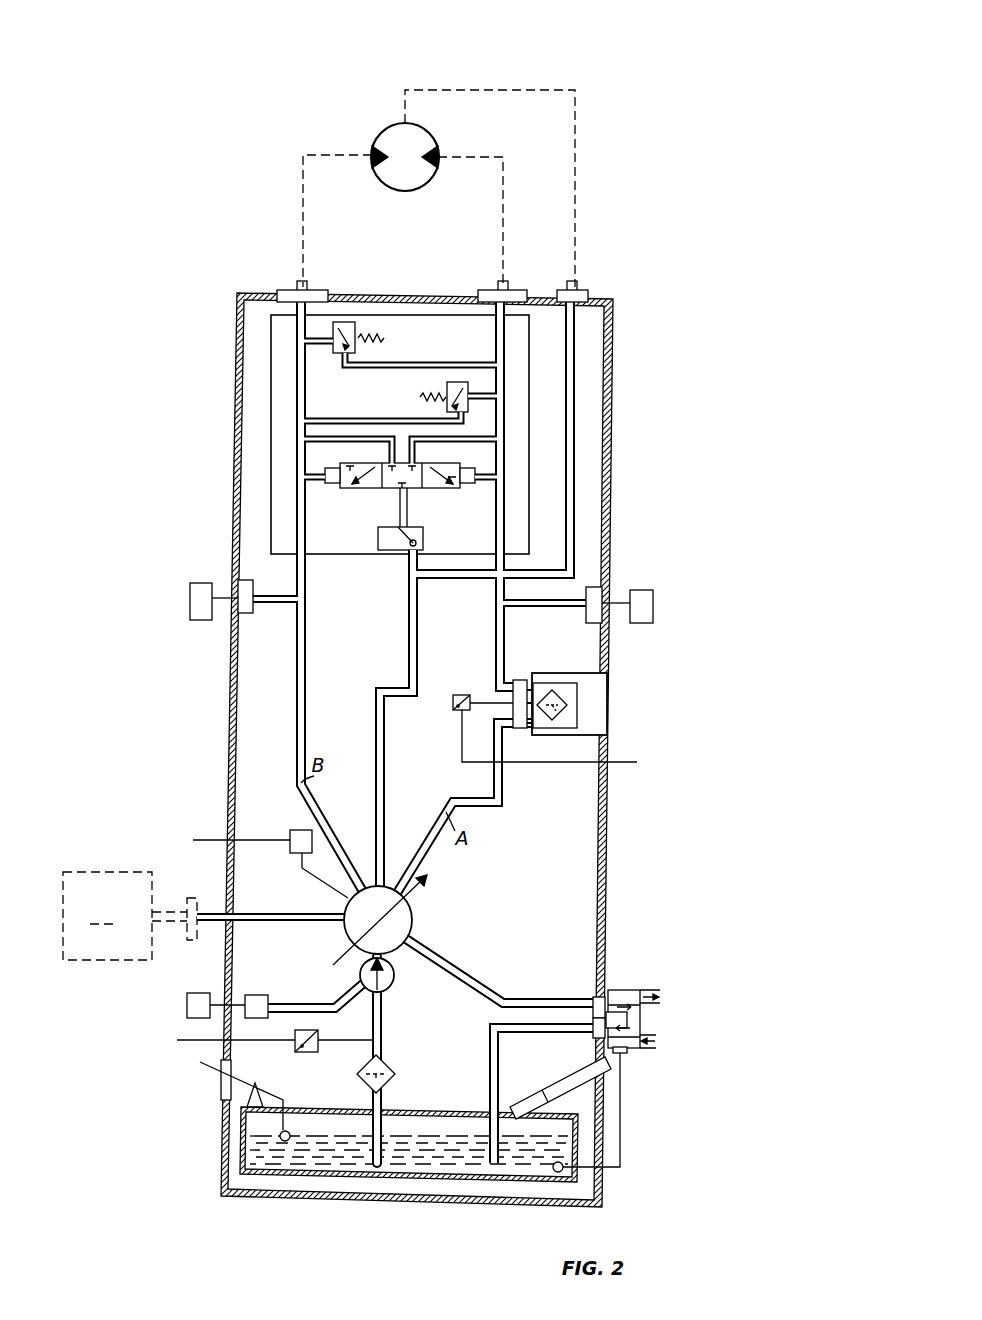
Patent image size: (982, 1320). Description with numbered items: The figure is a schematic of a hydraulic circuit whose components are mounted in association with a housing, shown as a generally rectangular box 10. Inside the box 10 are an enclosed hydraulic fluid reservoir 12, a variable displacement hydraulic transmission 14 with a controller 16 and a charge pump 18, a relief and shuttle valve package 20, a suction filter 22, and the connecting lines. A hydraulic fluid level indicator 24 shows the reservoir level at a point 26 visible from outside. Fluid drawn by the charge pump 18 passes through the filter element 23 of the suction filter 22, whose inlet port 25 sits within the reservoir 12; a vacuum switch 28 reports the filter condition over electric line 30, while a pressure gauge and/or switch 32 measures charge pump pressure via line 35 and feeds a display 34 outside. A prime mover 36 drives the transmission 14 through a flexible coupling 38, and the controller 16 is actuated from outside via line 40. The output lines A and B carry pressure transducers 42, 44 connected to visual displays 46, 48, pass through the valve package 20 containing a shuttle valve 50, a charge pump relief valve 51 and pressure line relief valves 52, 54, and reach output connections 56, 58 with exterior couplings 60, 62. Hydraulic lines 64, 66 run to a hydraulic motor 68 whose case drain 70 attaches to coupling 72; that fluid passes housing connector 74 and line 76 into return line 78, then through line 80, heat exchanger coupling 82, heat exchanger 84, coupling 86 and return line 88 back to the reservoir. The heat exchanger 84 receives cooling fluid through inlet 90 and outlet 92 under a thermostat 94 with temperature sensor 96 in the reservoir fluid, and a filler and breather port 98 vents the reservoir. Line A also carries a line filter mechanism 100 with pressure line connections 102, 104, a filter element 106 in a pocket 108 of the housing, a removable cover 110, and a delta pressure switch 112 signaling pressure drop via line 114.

The housing 10 is at (234, 485).
The hydraulic fluid reservoir 12 is at (245, 1155).
The variable displacement hydraulic transmission 14 is at (412, 928).
The controller 16 is at (300, 829).
The charge pump 18 is at (390, 987).
The relief and shuttle valve package 20 is at (271, 379).
The suction filter 22 is at (389, 1064).
The filter element 23 is at (388, 1085).
The hydraulic fluid level indicator 24 is at (258, 1085).
The inlet port 25 is at (388, 1163).
The exterior viewing point 26 is at (216, 1086).
The vacuum switch 28 is at (318, 1034).
The electric line 30 is at (208, 1040).
The pressure gauge and/or switch 32 is at (257, 995).
The display 34 is at (187, 1000).
The line 35 is at (310, 1003).
The prime mover 36 is at (107, 916).
The flexible coupling 38 is at (190, 898).
The line 40 is at (205, 838).
The pressure transducer 42 is at (584, 624).
The pressure transducer 44 is at (245, 613).
The visual display 46 is at (640, 622).
The visual display 48 is at (195, 620).
The shuttle valve 50 is at (425, 510).
The charge pump relief valve 51 is at (375, 543).
The pressure line relief valve 52 is at (446, 391).
The pressure line relief valve 54 is at (357, 350).
The output connection 56 is at (515, 290).
The output connection 58 is at (316, 289).
The exterior coupling 60 is at (497, 284).
The exterior coupling 62 is at (298, 282).
The hydraulic line 64 is at (500, 195).
The hydraulic line 66 is at (302, 198).
The hydraulic motor 68 is at (385, 130).
The case drain 70 is at (513, 90).
The coupling 72 is at (577, 286).
The housing connector 74 is at (608, 301).
The line 76 is at (572, 517).
The return line 78 is at (407, 637).
The line 80 is at (484, 988).
The heat exchanger coupling 82 is at (595, 998).
The heat exchanger 84 is at (630, 989).
The coupling 86 is at (594, 1036).
The return line 88 is at (488, 1078).
The inlet 90 is at (657, 1002).
The outlet 92 is at (652, 1046).
The thermostat 94 is at (623, 1054).
The temperature sensor 96 is at (577, 1177).
The reservoir filler and breather port 98 is at (600, 1100).
The line filter mechanism 100 is at (543, 740).
The pressure line connection 102 is at (493, 732).
The pressure line connection 104 is at (495, 686).
The filter element 106 is at (560, 717).
The pocket 108 is at (604, 676).
The removable cover 110 is at (578, 705).
The delta pressure switch 112 is at (452, 705).
The line 114 is at (523, 766).